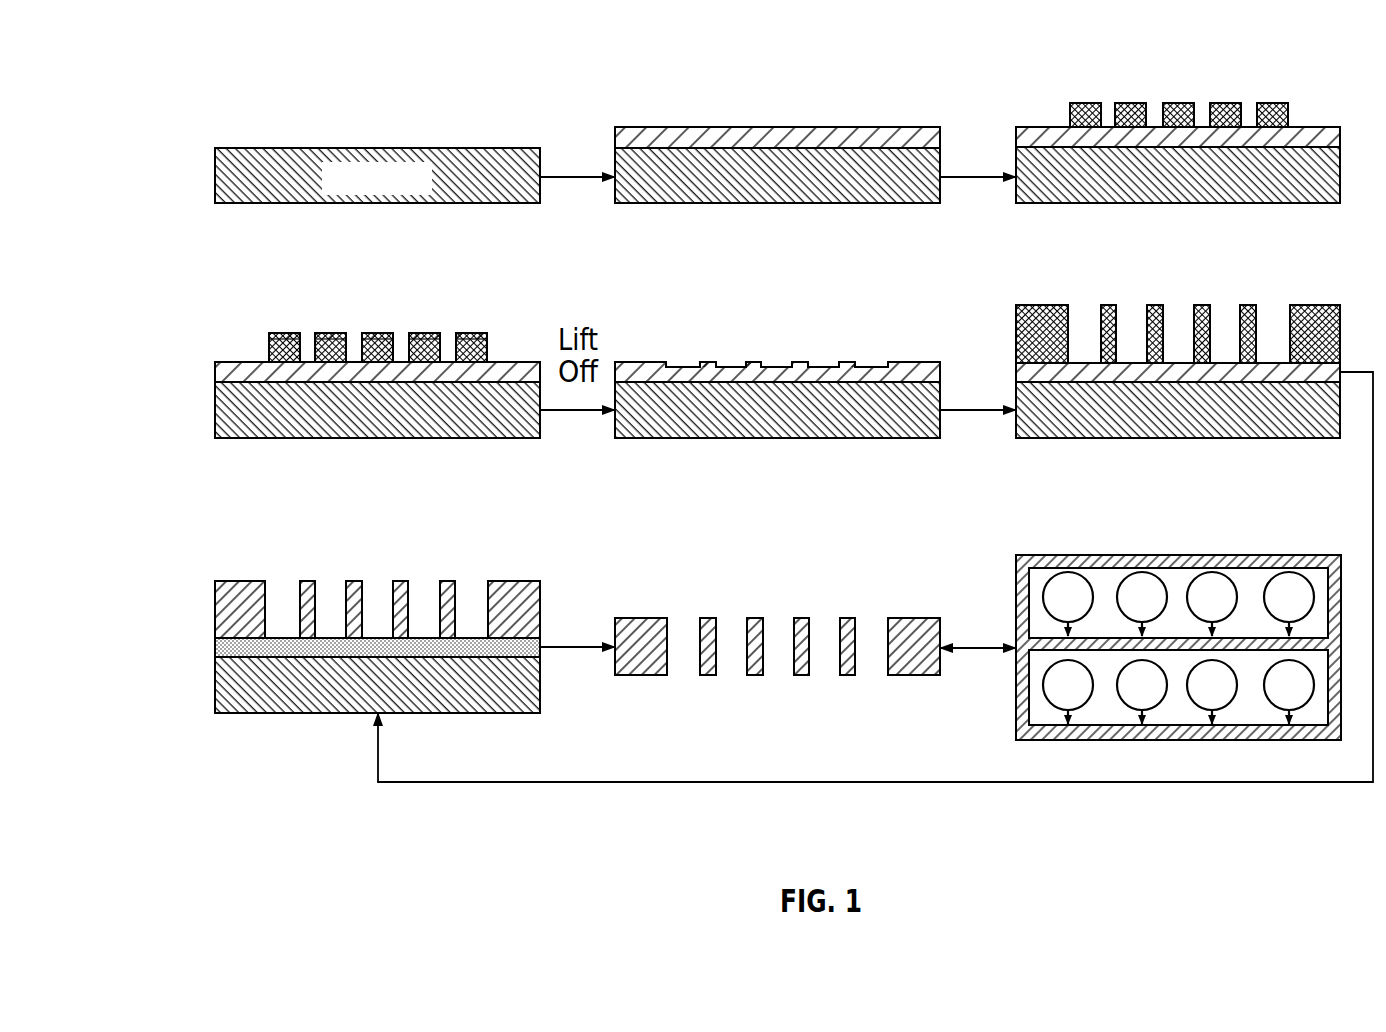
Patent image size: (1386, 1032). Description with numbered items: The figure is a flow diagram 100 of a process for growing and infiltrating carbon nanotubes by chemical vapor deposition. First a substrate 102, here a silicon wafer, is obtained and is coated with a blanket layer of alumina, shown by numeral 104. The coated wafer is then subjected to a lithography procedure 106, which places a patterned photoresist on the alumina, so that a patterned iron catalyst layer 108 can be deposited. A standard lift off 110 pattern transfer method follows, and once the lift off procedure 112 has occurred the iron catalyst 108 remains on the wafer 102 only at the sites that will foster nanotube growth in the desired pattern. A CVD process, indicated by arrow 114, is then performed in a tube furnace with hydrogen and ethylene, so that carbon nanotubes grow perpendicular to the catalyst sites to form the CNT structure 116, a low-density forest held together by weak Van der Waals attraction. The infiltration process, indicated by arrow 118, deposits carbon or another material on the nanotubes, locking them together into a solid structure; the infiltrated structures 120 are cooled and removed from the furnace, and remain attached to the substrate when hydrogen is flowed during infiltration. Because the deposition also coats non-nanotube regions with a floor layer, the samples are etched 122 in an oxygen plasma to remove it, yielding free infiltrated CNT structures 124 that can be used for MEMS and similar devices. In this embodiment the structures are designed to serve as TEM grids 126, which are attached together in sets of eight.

The flow diagram 100 is at (176, 65).
The substrate 102 is at (284, 148).
The alumina coating 104 is at (684, 127).
The lithography procedure 106 is at (1274, 103).
The patterned iron catalyst layer 108 is at (476, 333).
The lift off 110 is at (858, 371).
The lift off procedure 112 is at (702, 362).
The CVD process 114 is at (975, 412).
The carbon nanotube structure 116 is at (1108, 305).
The infiltration process 118 is at (960, 783).
The infiltrated structures 120 is at (246, 722).
The etching step 122 is at (592, 654).
The infiltrated CNT structures 124 is at (733, 687).
The TEM grids 126 is at (1078, 745).